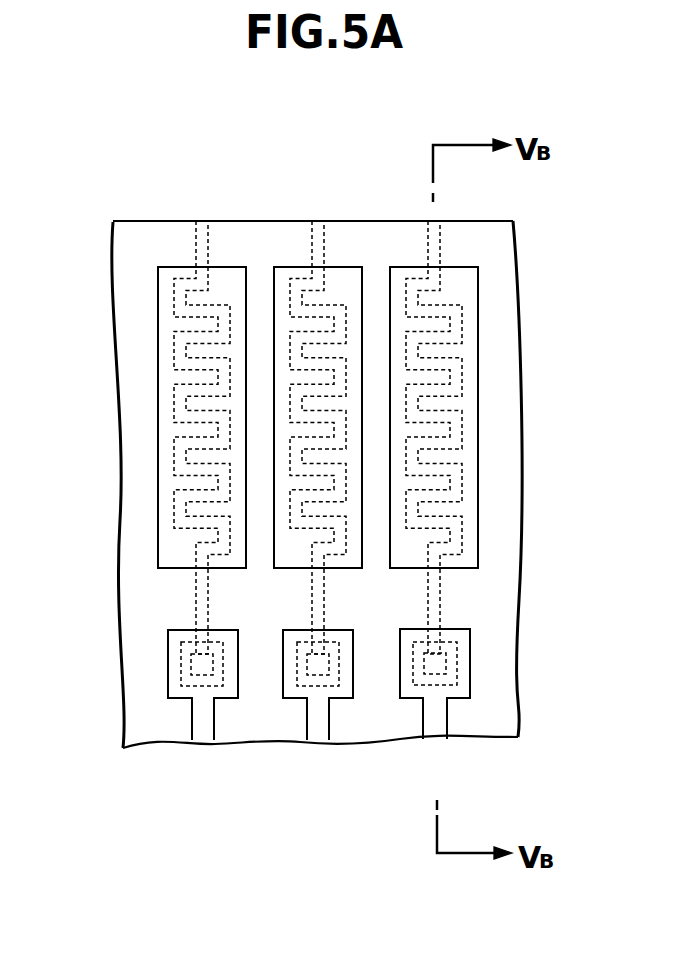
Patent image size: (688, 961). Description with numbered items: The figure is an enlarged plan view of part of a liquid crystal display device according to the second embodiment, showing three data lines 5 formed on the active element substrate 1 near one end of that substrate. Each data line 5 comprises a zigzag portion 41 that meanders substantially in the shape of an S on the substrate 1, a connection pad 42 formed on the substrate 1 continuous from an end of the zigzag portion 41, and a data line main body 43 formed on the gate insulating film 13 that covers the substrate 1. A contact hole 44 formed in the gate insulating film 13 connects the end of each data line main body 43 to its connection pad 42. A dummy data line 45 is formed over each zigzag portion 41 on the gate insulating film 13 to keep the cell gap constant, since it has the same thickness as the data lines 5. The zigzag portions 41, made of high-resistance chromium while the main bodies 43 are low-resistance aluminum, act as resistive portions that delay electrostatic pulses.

The active element substrate 1 is at (143, 221).
The gate insulating film 13 is at (264, 225).
The data line 5 is at (319, 524).
The zigzag portion 41 is at (465, 357).
The connection pad 42 is at (183, 650).
The data line main body 43 is at (193, 718).
The contact hole 44 is at (193, 673).
The dummy data line 45 is at (463, 278).